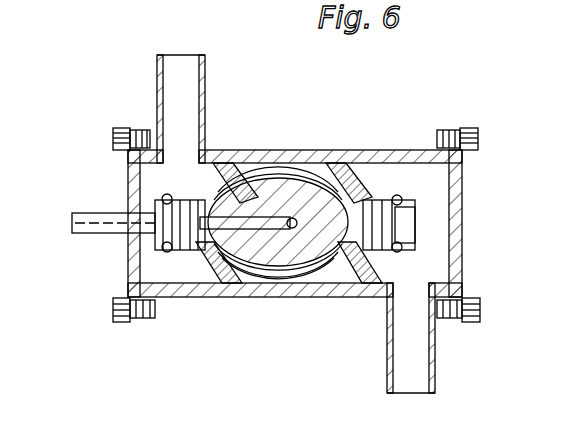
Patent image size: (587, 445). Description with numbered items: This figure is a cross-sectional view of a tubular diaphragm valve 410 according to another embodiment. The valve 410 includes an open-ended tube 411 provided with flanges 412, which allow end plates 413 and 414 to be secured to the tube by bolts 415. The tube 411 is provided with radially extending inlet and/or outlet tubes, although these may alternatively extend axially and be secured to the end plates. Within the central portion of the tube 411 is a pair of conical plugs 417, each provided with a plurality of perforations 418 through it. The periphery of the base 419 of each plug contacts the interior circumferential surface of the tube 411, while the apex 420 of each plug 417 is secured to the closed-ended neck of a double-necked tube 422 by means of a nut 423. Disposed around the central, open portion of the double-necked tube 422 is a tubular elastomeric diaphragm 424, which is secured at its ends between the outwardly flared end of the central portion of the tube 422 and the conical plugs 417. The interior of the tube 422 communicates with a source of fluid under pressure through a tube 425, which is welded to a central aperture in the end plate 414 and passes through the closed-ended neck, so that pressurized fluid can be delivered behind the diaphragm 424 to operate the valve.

The tubular diaphragm valve 410 is at (205, 80).
The open-ended tube 411 is at (290, 150).
The flanges 412 is at (148, 128).
The end plate 413 is at (455, 200).
The end plate 414 is at (133, 190).
The bolts 415 is at (113, 137).
The conical plugs 417 is at (362, 250).
The perforations 418 is at (335, 165).
The base 419 is at (325, 178).
The apex 420 is at (183, 262).
The double-necked tube 422 is at (300, 268).
The nut 423 is at (168, 244).
The tubular elastomeric diaphragm 424 is at (290, 272).
The tube 425 is at (190, 205).